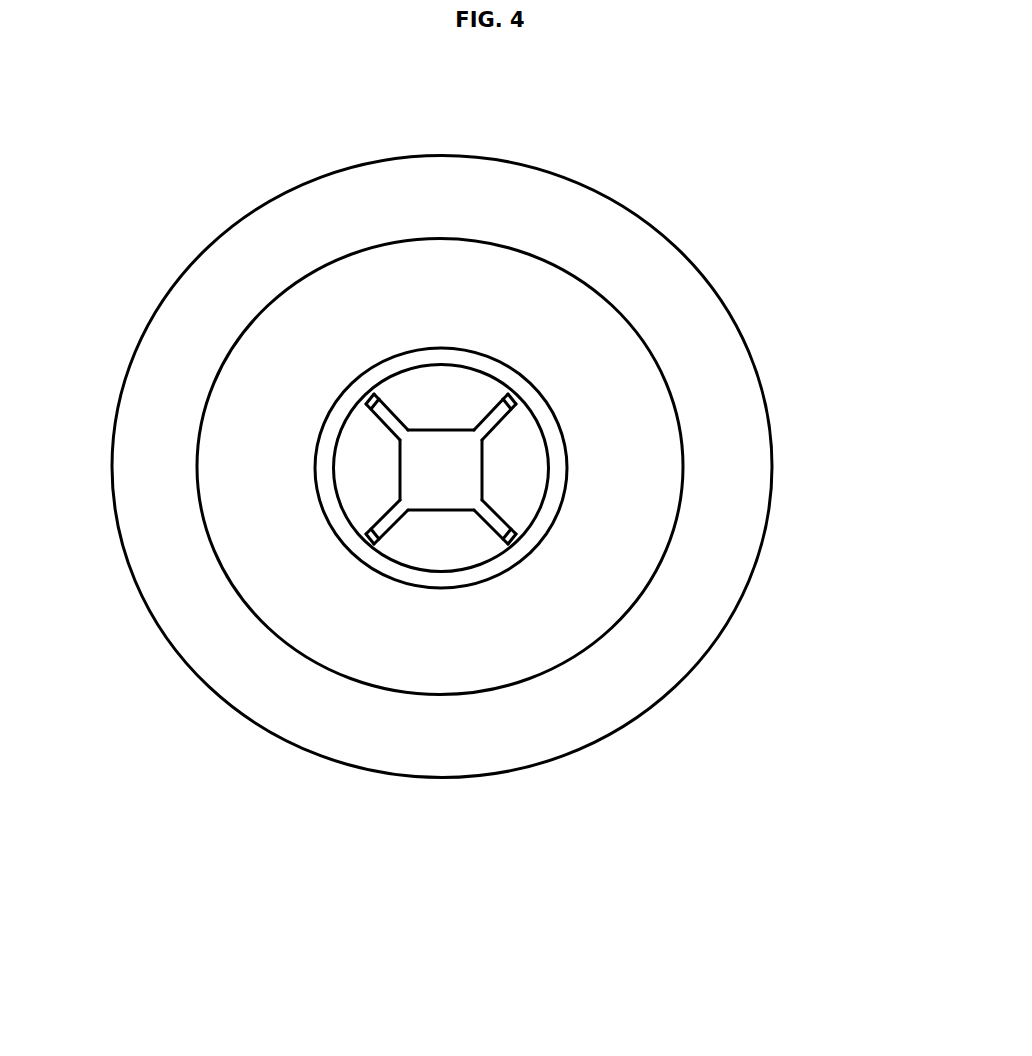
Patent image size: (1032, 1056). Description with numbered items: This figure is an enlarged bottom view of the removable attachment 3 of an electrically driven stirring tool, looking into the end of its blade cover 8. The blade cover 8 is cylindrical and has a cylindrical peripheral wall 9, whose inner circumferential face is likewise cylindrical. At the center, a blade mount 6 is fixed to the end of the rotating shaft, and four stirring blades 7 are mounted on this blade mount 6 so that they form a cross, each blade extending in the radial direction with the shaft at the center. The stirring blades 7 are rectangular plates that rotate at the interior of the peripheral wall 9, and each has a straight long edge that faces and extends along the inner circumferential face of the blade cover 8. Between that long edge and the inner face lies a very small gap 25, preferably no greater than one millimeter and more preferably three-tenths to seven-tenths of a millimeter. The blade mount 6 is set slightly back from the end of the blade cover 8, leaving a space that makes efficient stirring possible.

The attachment 3 is at (668, 225).
The blade mount 6 is at (441, 655).
The stirring blades 7 is at (390, 411).
The blade cover 8 is at (595, 463).
The peripheral wall 9 is at (603, 468).
The gap 25 is at (338, 479).